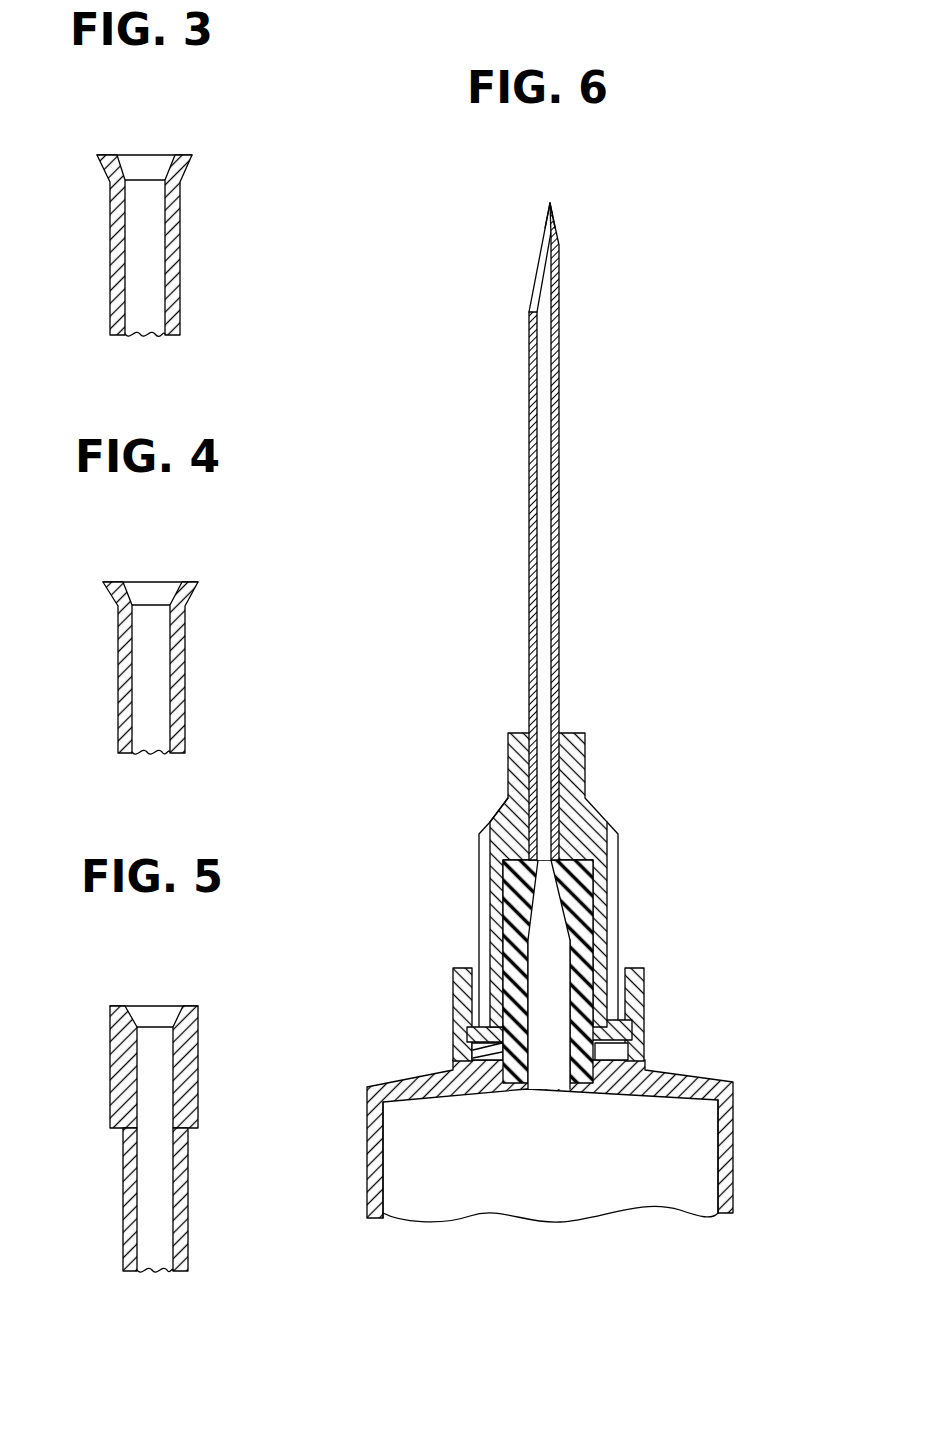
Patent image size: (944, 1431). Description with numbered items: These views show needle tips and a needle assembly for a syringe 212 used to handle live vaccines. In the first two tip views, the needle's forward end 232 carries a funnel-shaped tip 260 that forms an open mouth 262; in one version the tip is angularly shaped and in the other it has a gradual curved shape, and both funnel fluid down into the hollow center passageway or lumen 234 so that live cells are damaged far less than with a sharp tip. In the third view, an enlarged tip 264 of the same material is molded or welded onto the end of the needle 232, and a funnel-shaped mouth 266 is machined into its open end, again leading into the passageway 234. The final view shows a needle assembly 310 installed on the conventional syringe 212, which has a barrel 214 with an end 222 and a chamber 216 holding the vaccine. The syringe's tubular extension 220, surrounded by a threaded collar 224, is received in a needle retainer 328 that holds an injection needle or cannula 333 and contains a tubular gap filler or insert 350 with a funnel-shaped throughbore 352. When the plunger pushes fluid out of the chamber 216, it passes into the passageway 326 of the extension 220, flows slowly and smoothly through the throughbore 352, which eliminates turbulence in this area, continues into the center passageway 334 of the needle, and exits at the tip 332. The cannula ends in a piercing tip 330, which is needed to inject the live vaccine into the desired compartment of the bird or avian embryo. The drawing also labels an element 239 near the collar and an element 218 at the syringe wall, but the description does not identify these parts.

In FIG. 3, the funnel-shaped tip 260 is at (76, 207).
In FIG. 4, the funnel-shaped tip 260 is at (81, 630).
In FIG. 5, the funnel-shaped tip 260 is at (83, 1054).
In FIG. 3, the funnel-shaped mouth 262 is at (148, 160).
In FIG. 4, the funnel-shaped mouth 262 is at (152, 585).
In FIG. 3, the forward end of needle 232 is at (182, 230).
In FIG. 4, the forward end of needle 232 is at (186, 650).
In FIG. 5, the forward end of needle 232 is at (188, 1222).
In FIG. 3, the center passageway 234 is at (143, 320).
In FIG. 4, the center passageway 234 is at (148, 740).
In FIG. 5, the center passageway 234 is at (152, 1255).
In FIG. 5, the funnel-shaped mouth 266 is at (155, 1007).
In FIG. 5, the enlarged tip 264 is at (198, 1072).
In FIG. 6, the needle assembly 310 is at (482, 513).
In FIG. 6, the piercing tip 330 is at (550, 203).
In FIG. 6, the tip 332 is at (530, 312).
In FIG. 6, the injection needle or cannula 333 is at (533, 620).
In FIG. 6, the center passageway 334 is at (543, 492).
In FIG. 6, the needle retainer 328 is at (580, 742).
In FIG. 6, the tubular gap filler 350 is at (503, 827).
In FIG. 6, the throughbore 352 is at (548, 888).
In FIG. 6, the passageway 326 is at (548, 935).
In FIG. 6, the tubular extension 220 is at (493, 945).
In FIG. 6, the collar 224 is at (645, 975).
In FIG. 6, the locking tab 239 is at (453, 1068).
In FIG. 6, the end of barrel 222 is at (703, 1073).
In FIG. 6, the chamber 216 is at (570, 1176).
In FIG. 6, the syringe 212 is at (757, 1115).
In FIG. 6, the inner wall 218 is at (383, 1180).
In FIG. 6, the barrel 214 is at (733, 1180).